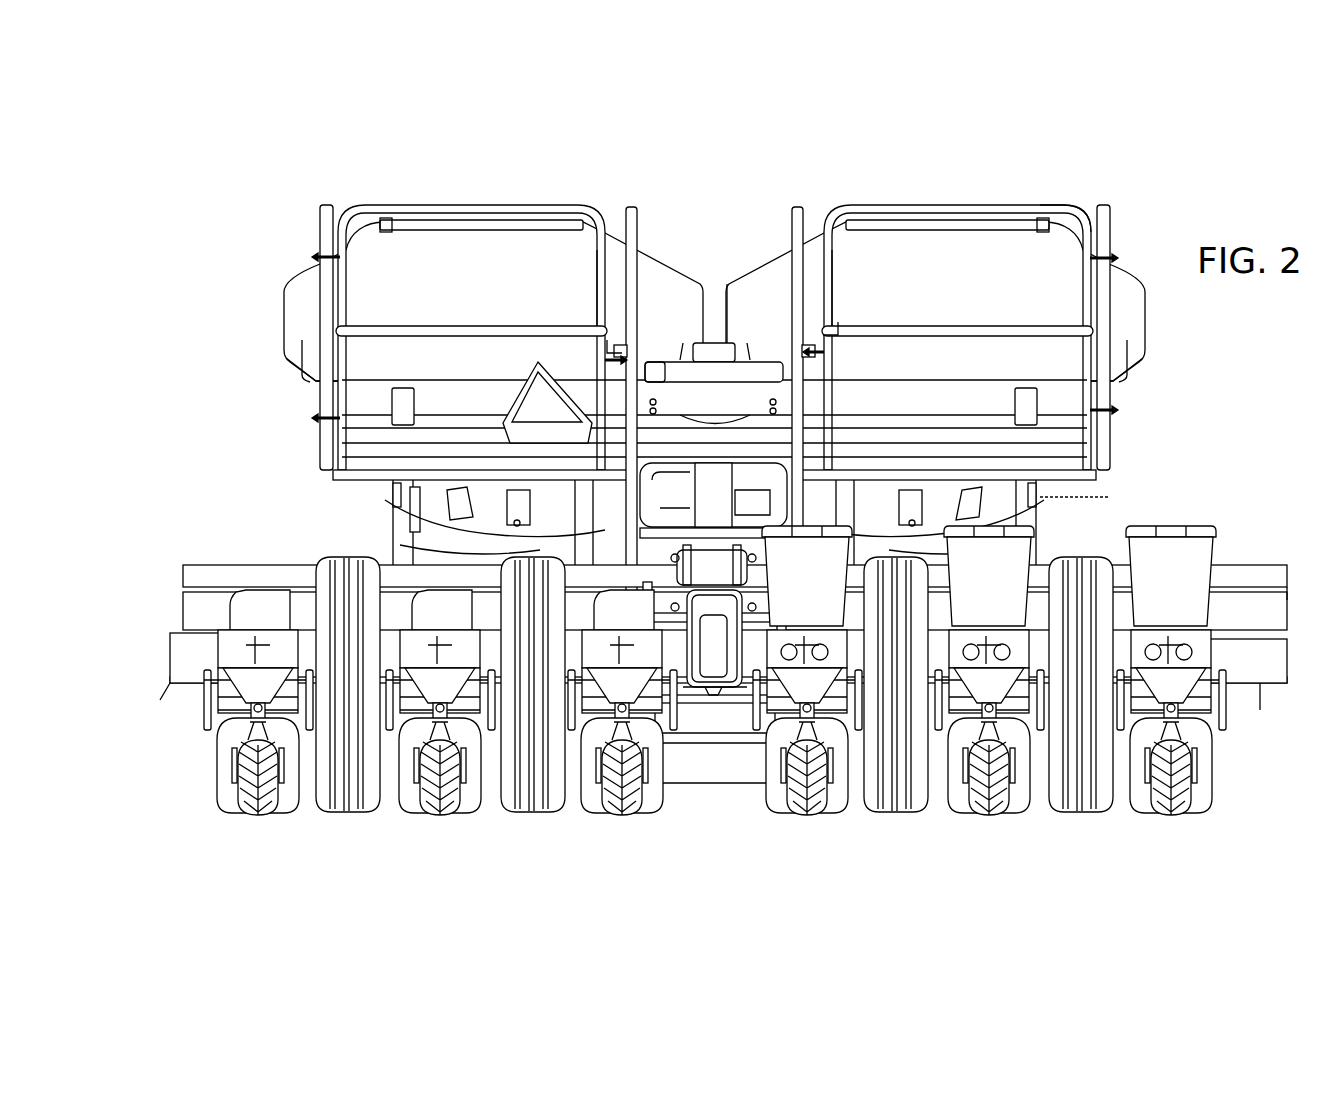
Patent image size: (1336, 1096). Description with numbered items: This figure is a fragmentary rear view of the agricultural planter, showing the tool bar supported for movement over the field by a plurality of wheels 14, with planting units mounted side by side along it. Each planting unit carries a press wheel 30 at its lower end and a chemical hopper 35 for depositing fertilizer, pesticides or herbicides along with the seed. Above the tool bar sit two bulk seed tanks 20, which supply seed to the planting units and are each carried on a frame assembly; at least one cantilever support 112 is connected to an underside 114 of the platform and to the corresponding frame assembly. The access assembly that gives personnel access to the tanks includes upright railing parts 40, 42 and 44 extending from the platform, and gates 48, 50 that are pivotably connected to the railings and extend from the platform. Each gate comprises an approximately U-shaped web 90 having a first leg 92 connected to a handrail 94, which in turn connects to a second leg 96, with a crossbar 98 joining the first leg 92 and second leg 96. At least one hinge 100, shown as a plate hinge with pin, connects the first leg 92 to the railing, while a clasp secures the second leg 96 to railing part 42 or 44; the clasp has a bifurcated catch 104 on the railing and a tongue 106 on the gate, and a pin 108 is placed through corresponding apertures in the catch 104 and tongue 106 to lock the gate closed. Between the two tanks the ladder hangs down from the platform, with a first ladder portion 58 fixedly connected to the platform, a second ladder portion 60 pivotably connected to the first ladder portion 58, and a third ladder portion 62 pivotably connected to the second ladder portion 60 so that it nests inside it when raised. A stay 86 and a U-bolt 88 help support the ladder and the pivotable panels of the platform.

The wheels 14 is at (1055, 800).
The bulk seed tank 20 is at (287, 315).
The press wheel 30 is at (1180, 795).
The chemical hopper 35 is at (1175, 525).
The railing part 40 is at (322, 203).
The railing part 42 is at (637, 207).
The railing part 44 is at (797, 207).
The gate 48 is at (392, 205).
The gate 50 is at (1053, 202).
The first ladder portion 58 is at (657, 532).
The second ladder portion 60 is at (728, 690).
The third ladder portion 62 is at (682, 782).
The stay 86 is at (717, 557).
The U-bolt 88 is at (748, 660).
The U-shaped web 90 is at (793, 259).
The first leg 92 is at (337, 353).
The handrail 94 is at (457, 207).
The second leg 96 is at (603, 290).
The crossbar 98 is at (495, 330).
The hinge 100 is at (330, 257).
The bifurcated catch 104 is at (630, 350).
The tongue 106 is at (617, 353).
The pin 108 is at (605, 360).
The cantilever support 112 is at (392, 490).
The underside 114 is at (410, 528).